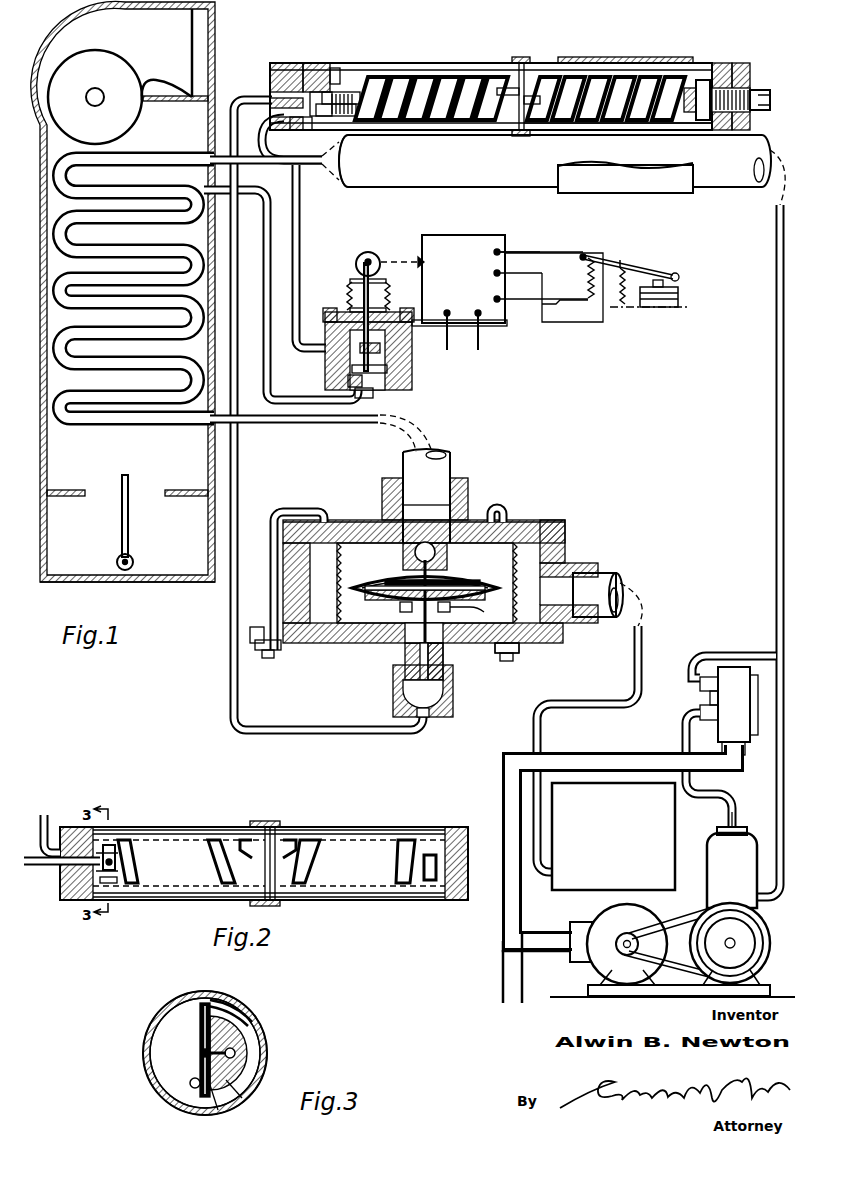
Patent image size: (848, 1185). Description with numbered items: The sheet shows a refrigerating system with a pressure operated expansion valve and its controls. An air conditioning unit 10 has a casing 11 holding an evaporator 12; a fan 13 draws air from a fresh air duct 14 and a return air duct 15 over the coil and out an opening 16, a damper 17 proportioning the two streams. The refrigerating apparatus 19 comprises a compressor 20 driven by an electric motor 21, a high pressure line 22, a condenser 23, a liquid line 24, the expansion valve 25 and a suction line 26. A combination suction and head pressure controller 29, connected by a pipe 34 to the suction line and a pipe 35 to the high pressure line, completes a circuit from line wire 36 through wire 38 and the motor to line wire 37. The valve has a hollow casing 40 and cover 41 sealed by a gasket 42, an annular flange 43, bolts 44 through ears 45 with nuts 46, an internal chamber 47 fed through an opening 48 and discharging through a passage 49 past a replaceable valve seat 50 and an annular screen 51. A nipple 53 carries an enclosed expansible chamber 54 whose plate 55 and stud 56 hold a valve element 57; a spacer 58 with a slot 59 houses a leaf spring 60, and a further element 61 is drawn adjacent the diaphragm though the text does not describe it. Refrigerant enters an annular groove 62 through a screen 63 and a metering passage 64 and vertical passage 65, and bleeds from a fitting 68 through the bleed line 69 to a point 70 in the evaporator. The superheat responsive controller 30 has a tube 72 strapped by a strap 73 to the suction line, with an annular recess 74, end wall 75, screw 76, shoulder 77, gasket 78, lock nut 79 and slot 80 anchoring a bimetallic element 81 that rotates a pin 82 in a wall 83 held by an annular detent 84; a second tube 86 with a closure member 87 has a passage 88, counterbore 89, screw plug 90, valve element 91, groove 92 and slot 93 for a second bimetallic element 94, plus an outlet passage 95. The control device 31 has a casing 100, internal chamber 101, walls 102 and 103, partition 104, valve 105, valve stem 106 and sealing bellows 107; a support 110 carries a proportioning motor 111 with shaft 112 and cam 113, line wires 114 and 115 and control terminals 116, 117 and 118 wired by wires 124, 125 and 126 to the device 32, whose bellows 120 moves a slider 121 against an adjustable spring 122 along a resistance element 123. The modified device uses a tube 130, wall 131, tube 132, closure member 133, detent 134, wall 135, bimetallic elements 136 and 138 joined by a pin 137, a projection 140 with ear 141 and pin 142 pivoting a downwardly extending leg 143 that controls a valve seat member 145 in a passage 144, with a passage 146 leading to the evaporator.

In FIG. 1, the air conditioning unit 10 is at (180, 602).
In FIG. 1, the casing 11 is at (47, 441).
In FIG. 1, the evaporator 12 is at (128, 424).
In FIG. 1, the fan 13 is at (62, 44).
In FIG. 1, the fresh air duct 14 is at (46, 536).
In FIG. 1, the return air duct 15 is at (204, 530).
In FIG. 1, the opening 16 is at (215, 34).
In FIG. 1, the damper 17 is at (128, 522).
In FIG. 1, the refrigerating apparatus 19 is at (632, 821).
In FIG. 1, the compressor 20 is at (710, 856).
In FIG. 1, the electric motor 21 is at (605, 916).
In FIG. 1, the high pressure line 22 is at (704, 794).
In FIG. 1, the condenser 23 is at (599, 848).
In FIG. 1, the liquid line 24 is at (286, 421).
In FIG. 1, the expansion valve 25 is at (430, 583).
In FIG. 1, the suction line 26 is at (400, 180).
In FIG. 1, the combination suction pressure and head pressure responsive controller 29 is at (690, 701).
In FIG. 1, the superheat responsive controller 30 is at (521, 85).
In FIG. 1, the control device 31 is at (439, 319).
In FIG. 1, the device responsive to the condition of the medium 32 is at (606, 299).
In FIG. 1, the pipe 34 is at (740, 654).
In FIG. 1, the pipe 35 is at (682, 728).
In FIG. 1, the line wire 36 is at (502, 1000).
In FIG. 1, the line wire 37 is at (522, 1003).
In FIG. 1, the wire 38 is at (522, 903).
In FIG. 1, the hollow casing 40 is at (566, 526).
In FIG. 1, the cover 41 is at (478, 644).
In FIG. 1, the gasket 42 is at (568, 630).
In FIG. 1, the annular flange 43 is at (516, 520).
In FIG. 1, the bolts 44 is at (272, 512).
In FIG. 1, the ears 45 is at (258, 626).
In FIG. 1, the nuts 46 is at (280, 650).
In FIG. 1, the internal chamber 47 is at (564, 554).
In FIG. 1, the opening 48 is at (590, 567).
In FIG. 1, the passage 49 is at (380, 494).
In FIG. 1, the replaceable valve seat 50 is at (380, 518).
In FIG. 1, the annular screen 51 is at (522, 646).
In FIG. 1, the nipple 53 is at (404, 656).
In FIG. 1, the enclosed expansible chamber 54 is at (486, 582).
In FIG. 1, the plate 55 is at (470, 578).
In FIG. 1, the stud 56 is at (436, 556).
In FIG. 1, the valve element 57 is at (402, 554).
In FIG. 1, the spacer 58 is at (366, 600).
In FIG. 1, the slot 59 is at (366, 584).
In FIG. 1, the leaf spring 60 is at (388, 580).
In FIG. 1, the spring 61 is at (387, 611).
In FIG. 1, the annular groove 62 is at (452, 610).
In FIG. 1, the screen 63 is at (475, 612).
In FIG. 1, the passage 64 is at (404, 612).
In FIG. 1, the vertical passage 65 is at (444, 656).
In FIG. 1, the fitting 68 is at (394, 694).
In FIG. 1, the bleed line 69 is at (243, 96).
In FIG. 2, the bleed line 69 is at (40, 828).
In FIG. 1, the point in the evaporator 70 is at (198, 186).
In FIG. 1, the tube 72 is at (546, 130).
In FIG. 1, the strap 73 is at (628, 58).
In FIG. 1, the annular recess 74 is at (722, 62).
In FIG. 1, the end wall 75 is at (742, 66).
In FIG. 1, the screw 76 is at (770, 84).
In FIG. 1, the shoulder 77 is at (704, 78).
In FIG. 1, the gasket 78 is at (700, 130).
In FIG. 1, the lock nut 79 is at (752, 72).
In FIG. 1, the slot 80 is at (688, 86).
In FIG. 1, the bimetallic element 81 is at (626, 130).
In FIG. 1, the pin 82 is at (534, 104).
In FIG. 1, the wall 83 is at (510, 98).
In FIG. 1, the annular detent 84 is at (532, 60).
In FIG. 1, the second tube 86 is at (376, 62).
In FIG. 1, the closure member 87 is at (284, 62).
In FIG. 1, the passage 88 is at (272, 77).
In FIG. 1, the counterbore 89 is at (272, 108).
In FIG. 1, the screw plug 90 is at (336, 66).
In FIG. 1, the valve element 91 is at (306, 62).
In FIG. 1, the groove 92 is at (340, 92).
In FIG. 1, the slot 93 is at (337, 111).
In FIG. 1, the bimetallic element 94 is at (400, 62).
In FIG. 1, the passage 95 is at (304, 130).
In FIG. 1, the casing 100 is at (414, 390).
In FIG. 1, the internal chamber 101 is at (412, 373).
In FIG. 1, the wall 102 is at (380, 392).
In FIG. 1, the wall 103 is at (344, 310).
In FIG. 1, the partition 104 is at (382, 348).
In FIG. 1, the valve 105 is at (326, 374).
In FIG. 1, the valve stem 106 is at (388, 298).
In FIG. 1, the sealing bellows 107 is at (352, 290).
In FIG. 1, the support 110 is at (496, 326).
In FIG. 1, the proportioning motor 111 is at (432, 284).
In FIG. 1, the shaft 112 is at (418, 258).
In FIG. 1, the cam 113 is at (362, 252).
In FIG. 1, the line wire 114 is at (447, 346).
In FIG. 1, the line wire 115 is at (480, 346).
In FIG. 1, the control terminal 116 is at (494, 245).
In FIG. 1, the control terminal 117 is at (494, 298).
In FIG. 1, the control terminal 118 is at (494, 272).
In FIG. 1, the bellows 120 is at (680, 292).
In FIG. 1, the slider 121 is at (644, 270).
In FIG. 1, the adjustable spring 122 is at (632, 310).
In FIG. 1, the resistance element 123 is at (584, 275).
In FIG. 1, the wire 124 is at (534, 252).
In FIG. 1, the wire 125 is at (562, 302).
In FIG. 1, the wire 126 is at (574, 320).
In FIG. 2, the tube 130 is at (340, 826).
In FIG. 2, the wall 131 is at (470, 830).
In FIG. 2, the tube 132 is at (176, 826).
In FIG. 3, the tube 132 is at (184, 992).
In FIG. 2, the closure member 133 is at (60, 878).
In FIG. 3, the closure member 133 is at (150, 1018).
In FIG. 2, the detent 134 is at (276, 822).
In FIG. 2, the wall 135 is at (254, 820).
In FIG. 2, the bimetallic element 136 is at (396, 898).
In FIG. 2, the pin 137 is at (288, 898).
In FIG. 2, the bimetallic element 138 is at (212, 896).
In FIG. 3, the bimetallic element 138 is at (236, 1006).
In FIG. 2, the projection 140 is at (125, 855).
In FIG. 3, the projection 140 is at (240, 1040).
In FIG. 3, the ear 141 is at (218, 1110).
In FIG. 3, the pin 142 is at (192, 1088).
In FIG. 2, the downwardly extending leg 143 is at (112, 844).
In FIG. 3, the downwardly extending leg 143 is at (198, 1040).
In FIG. 3, the passage 144 is at (236, 1052).
In FIG. 3, the valve seat member 145 is at (242, 1098).
In FIG. 2, the passage 146 is at (72, 892).
In FIG. 3, the passage 146 is at (198, 1054).